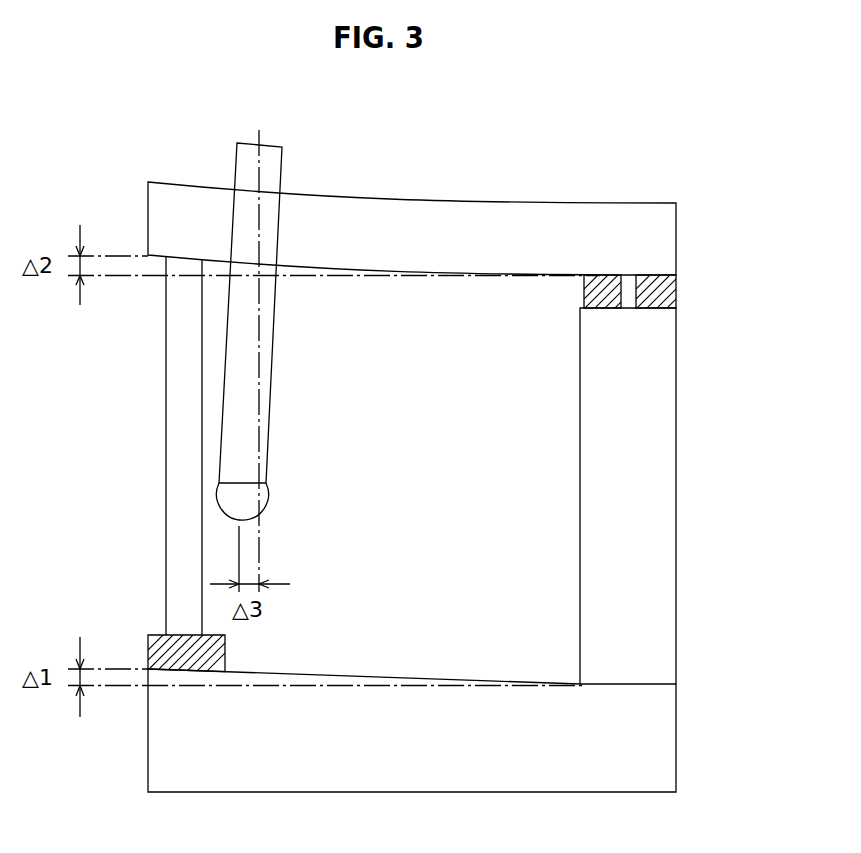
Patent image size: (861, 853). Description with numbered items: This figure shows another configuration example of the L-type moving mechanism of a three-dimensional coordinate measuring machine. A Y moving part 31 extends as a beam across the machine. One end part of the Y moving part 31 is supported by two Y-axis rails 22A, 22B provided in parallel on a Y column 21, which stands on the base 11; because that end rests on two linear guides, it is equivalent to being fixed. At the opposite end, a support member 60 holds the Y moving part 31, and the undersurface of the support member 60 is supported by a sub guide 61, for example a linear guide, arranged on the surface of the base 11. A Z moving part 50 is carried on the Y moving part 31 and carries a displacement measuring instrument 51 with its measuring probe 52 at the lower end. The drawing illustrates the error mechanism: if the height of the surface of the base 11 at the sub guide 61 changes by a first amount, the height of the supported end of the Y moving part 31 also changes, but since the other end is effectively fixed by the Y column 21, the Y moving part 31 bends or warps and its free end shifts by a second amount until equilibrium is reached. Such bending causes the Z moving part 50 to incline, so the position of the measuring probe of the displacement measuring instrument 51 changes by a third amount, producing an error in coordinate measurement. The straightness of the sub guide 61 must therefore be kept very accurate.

The base 11 is at (662, 741).
The Y column 21 is at (662, 598).
The Y-axis rail 22A is at (665, 294).
The Y-axis rail 22B is at (604, 287).
The Y moving part 31 is at (493, 218).
The Z moving part 50 is at (273, 168).
The displacement measuring instrument 51 is at (267, 501).
The stylus tip 52 is at (238, 546).
The support member 60 is at (177, 381).
The sub guide 61 is at (157, 637).